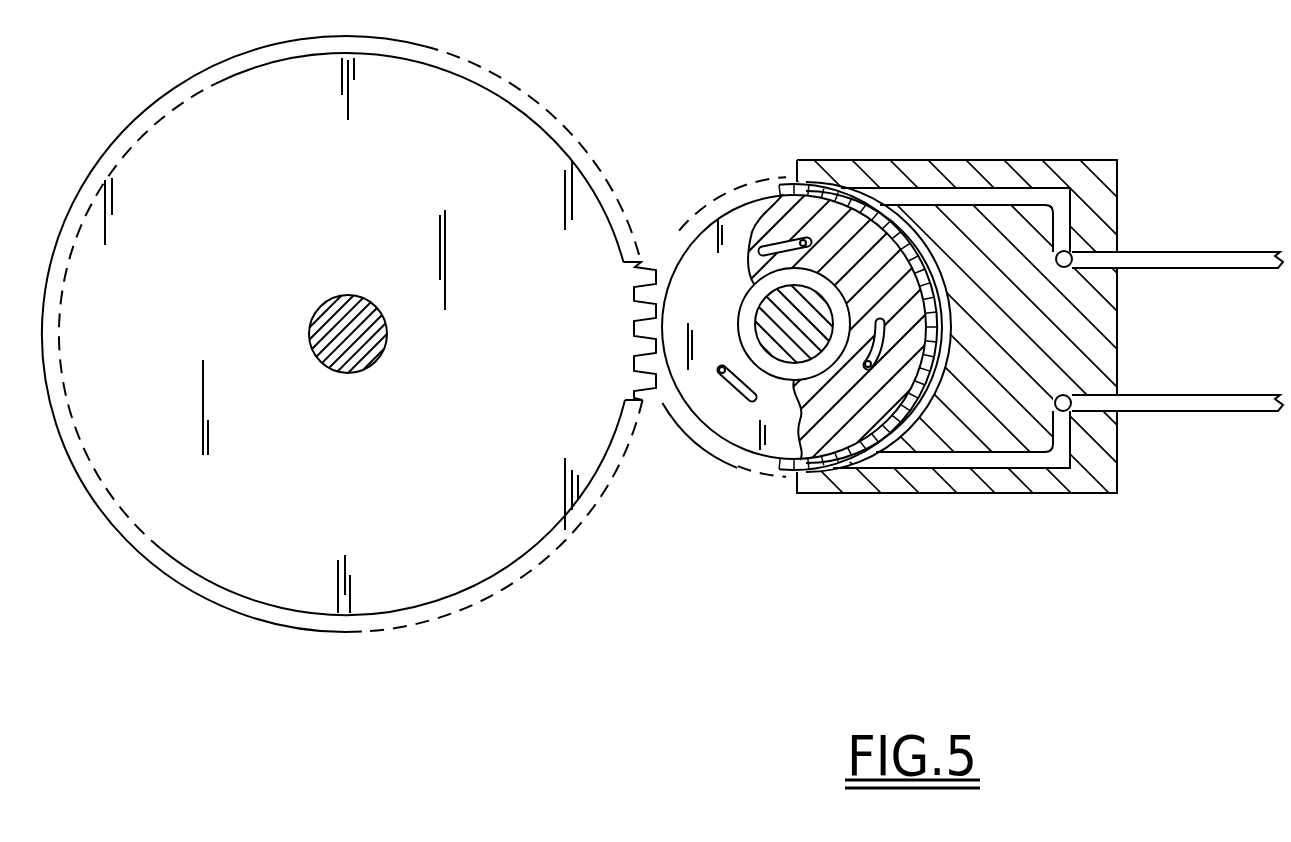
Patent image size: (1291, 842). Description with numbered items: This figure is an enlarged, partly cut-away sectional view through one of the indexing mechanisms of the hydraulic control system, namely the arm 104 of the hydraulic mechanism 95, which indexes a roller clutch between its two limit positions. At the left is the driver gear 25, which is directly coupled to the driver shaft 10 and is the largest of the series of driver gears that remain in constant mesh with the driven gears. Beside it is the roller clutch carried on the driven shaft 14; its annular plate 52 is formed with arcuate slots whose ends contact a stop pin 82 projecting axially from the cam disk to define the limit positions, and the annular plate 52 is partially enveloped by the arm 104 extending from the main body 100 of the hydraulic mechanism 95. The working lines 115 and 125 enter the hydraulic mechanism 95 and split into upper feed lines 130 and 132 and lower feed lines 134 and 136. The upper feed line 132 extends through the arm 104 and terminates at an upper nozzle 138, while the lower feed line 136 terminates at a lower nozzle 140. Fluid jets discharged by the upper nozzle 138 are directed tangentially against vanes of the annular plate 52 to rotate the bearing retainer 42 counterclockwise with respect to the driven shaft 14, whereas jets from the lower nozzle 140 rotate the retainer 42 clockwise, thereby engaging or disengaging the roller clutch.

The driver gear 25 is at (200, 245).
The driver shaft 10 is at (325, 370).
The annular plate 52 is at (738, 423).
The driven shaft 14 is at (767, 312).
The bearing retainer 42 is at (736, 247).
The stop pin 82 is at (703, 430).
The hydraulic mechanism 95 is at (1043, 160).
The main body 100 is at (1100, 320).
The arm 104 is at (847, 170).
The upper nozzle 138 is at (884, 187).
The lower nozzle 140 is at (873, 493).
The upper feed line 132 is at (963, 197).
The lower feed line 136 is at (990, 460).
The upper feed line 130 is at (1117, 290).
The lower feed line 134 is at (1070, 393).
The working line 115 is at (1202, 250).
The working line 125 is at (1202, 411).